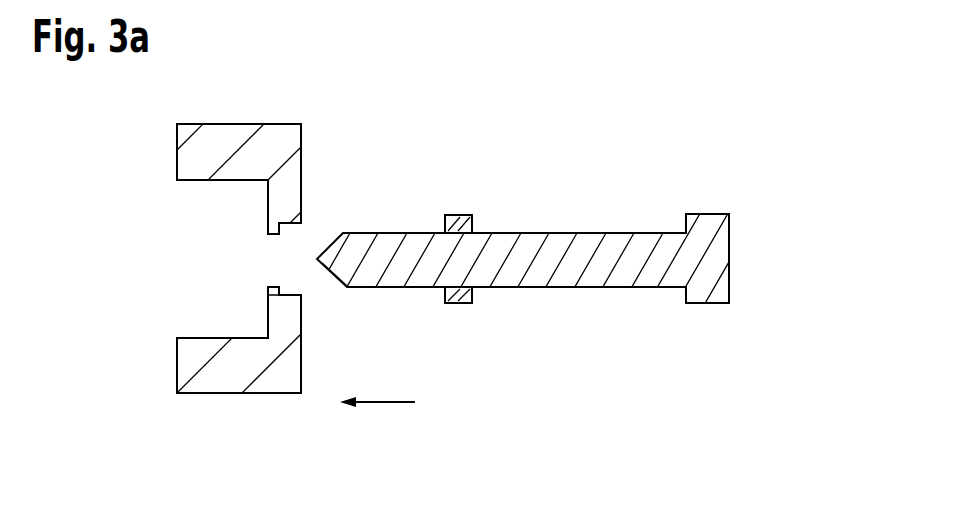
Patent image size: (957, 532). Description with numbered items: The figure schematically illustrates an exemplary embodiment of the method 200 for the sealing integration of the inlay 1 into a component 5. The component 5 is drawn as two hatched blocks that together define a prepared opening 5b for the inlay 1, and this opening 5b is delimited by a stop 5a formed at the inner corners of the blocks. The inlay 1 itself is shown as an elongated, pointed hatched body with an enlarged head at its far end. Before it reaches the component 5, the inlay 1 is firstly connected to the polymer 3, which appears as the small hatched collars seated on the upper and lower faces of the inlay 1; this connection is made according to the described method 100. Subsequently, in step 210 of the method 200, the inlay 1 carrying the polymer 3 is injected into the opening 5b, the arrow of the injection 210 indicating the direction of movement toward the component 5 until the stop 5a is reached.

The inlay 1 is at (615, 262).
The method 100 is at (542, 254).
The polymer 3 is at (450, 303).
The component 5 is at (200, 153).
The stop 5a is at (268, 290).
The opening 5b is at (290, 254).
The method 200 is at (690, 378).
The injection 210 is at (385, 402).